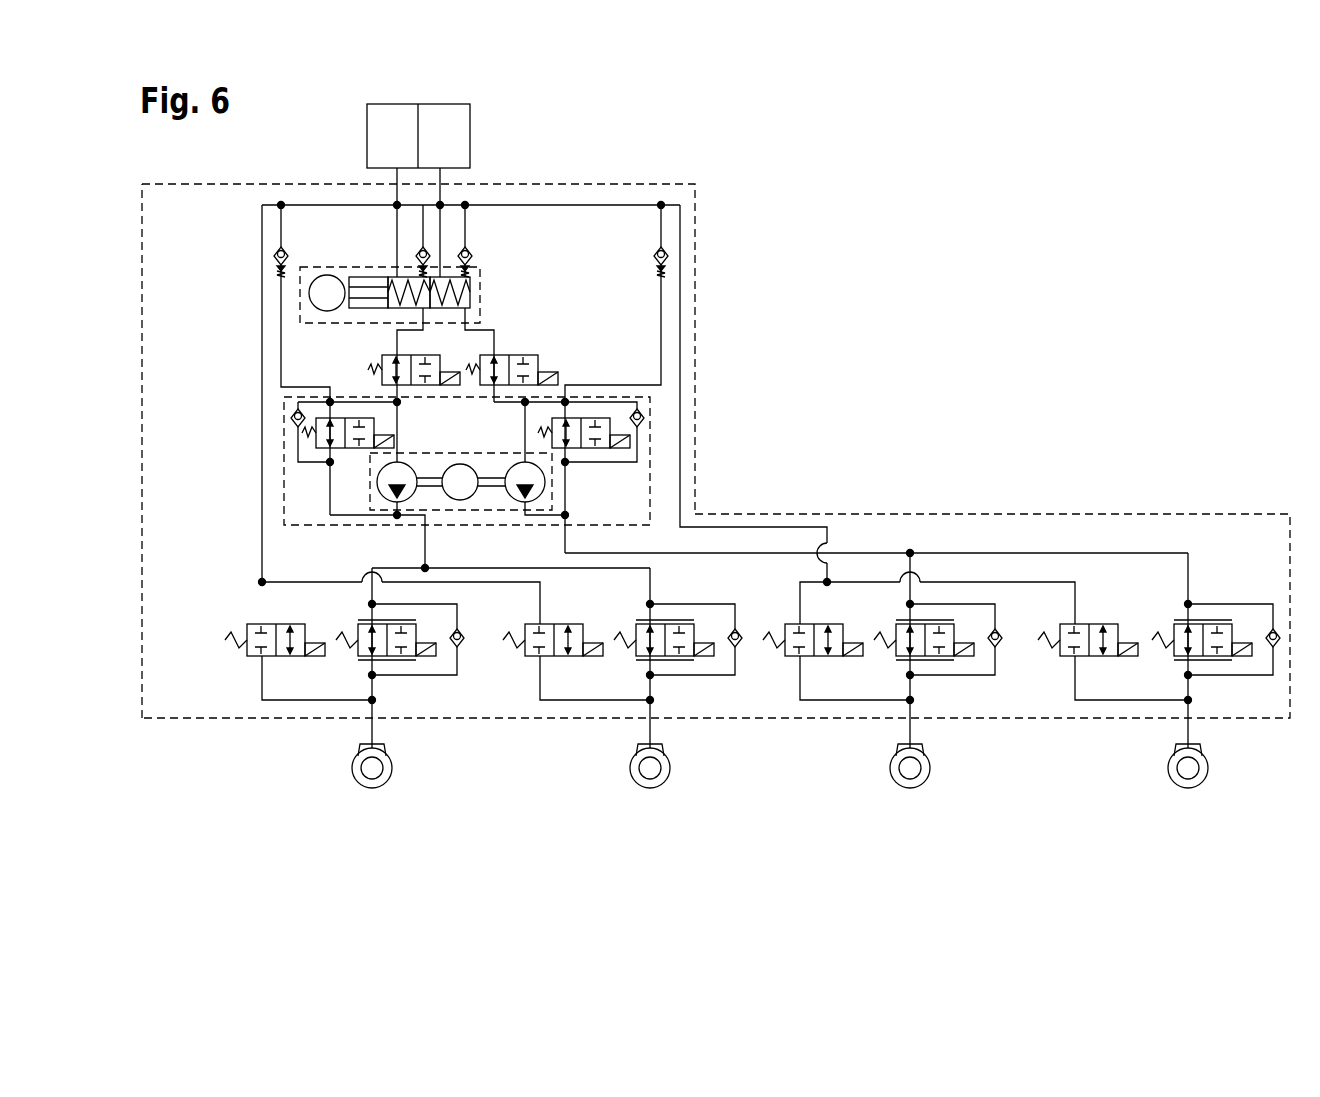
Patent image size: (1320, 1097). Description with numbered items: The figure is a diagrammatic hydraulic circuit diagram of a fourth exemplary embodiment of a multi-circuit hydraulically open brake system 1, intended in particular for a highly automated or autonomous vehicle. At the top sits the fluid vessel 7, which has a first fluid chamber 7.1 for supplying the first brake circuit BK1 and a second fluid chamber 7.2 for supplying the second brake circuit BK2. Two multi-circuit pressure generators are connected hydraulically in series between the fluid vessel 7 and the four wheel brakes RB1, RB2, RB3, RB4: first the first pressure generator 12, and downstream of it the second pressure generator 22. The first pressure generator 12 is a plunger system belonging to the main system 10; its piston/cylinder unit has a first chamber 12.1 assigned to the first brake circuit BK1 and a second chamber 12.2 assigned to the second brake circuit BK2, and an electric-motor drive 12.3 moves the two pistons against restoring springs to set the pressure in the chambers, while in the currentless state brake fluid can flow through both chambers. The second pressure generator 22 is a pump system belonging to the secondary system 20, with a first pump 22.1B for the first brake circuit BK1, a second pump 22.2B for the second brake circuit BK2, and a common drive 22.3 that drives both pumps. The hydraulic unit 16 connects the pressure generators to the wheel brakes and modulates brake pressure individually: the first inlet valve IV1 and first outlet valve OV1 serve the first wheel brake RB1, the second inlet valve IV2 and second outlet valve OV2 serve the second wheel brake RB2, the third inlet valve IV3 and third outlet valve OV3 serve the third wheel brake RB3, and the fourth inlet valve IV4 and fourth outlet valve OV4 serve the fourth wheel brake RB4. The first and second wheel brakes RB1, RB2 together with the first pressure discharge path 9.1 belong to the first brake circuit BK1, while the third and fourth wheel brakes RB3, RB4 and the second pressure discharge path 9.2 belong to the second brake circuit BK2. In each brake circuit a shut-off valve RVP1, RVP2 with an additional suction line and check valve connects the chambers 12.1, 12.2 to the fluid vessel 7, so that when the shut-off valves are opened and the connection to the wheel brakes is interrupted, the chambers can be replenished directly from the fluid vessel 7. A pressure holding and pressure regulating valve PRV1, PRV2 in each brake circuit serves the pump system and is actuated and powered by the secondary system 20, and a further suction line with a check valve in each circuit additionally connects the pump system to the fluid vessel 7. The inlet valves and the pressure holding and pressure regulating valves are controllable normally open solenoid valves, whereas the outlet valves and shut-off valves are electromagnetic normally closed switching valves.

The multi-circuit hydraulically open brake system 1 is at (1097, 262).
The fluid vessel 7 is at (470, 135).
The first fluid chamber 7.1 is at (408, 148).
The second fluid chamber 7.2 is at (460, 148).
The first pressure discharge path 9.1 is at (262, 220).
The second pressure discharge path 9.2 is at (680, 235).
The main system 10 is at (1165, 514).
The first pressure generator 12 is at (300, 272).
The first chamber 12.1 is at (405, 308).
The second chamber 12.2 is at (452, 308).
The drive 12.3 is at (308, 296).
The hydraulic unit 16 is at (895, 408).
The secondary system 20 is at (285, 490).
The second pressure generator 22 is at (555, 505).
The first pump 22.1B is at (377, 484).
The second pump 22.2B is at (545, 482).
The common drive 22.3 is at (460, 455).
The first shut-off valve RVP1 is at (386, 367).
The second shut-off valve RVP2 is at (531, 367).
The first pressure holding and pressure regulating valve PRV1 is at (370, 457).
The second pressure holding and pressure regulating valve PRV2 is at (558, 432).
The first outlet valve OV1 is at (296, 648).
The second outlet valve OV2 is at (574, 648).
The third outlet valve OV3 is at (835, 648).
The fourth outlet valve OV4 is at (1111, 648).
The first inlet valve IV1 is at (400, 658).
The second inlet valve IV2 is at (678, 658).
The third inlet valve IV3 is at (938, 650).
The fourth inlet valve IV4 is at (1216, 650).
The first wheel brake RB1 is at (372, 780).
The second wheel brake RB2 is at (650, 780).
The third wheel brake RB3 is at (910, 780).
The fourth wheel brake RB4 is at (1188, 780).
The first brake circuit BK1 is at (245, 745).
The second brake circuit BK2 is at (1230, 745).